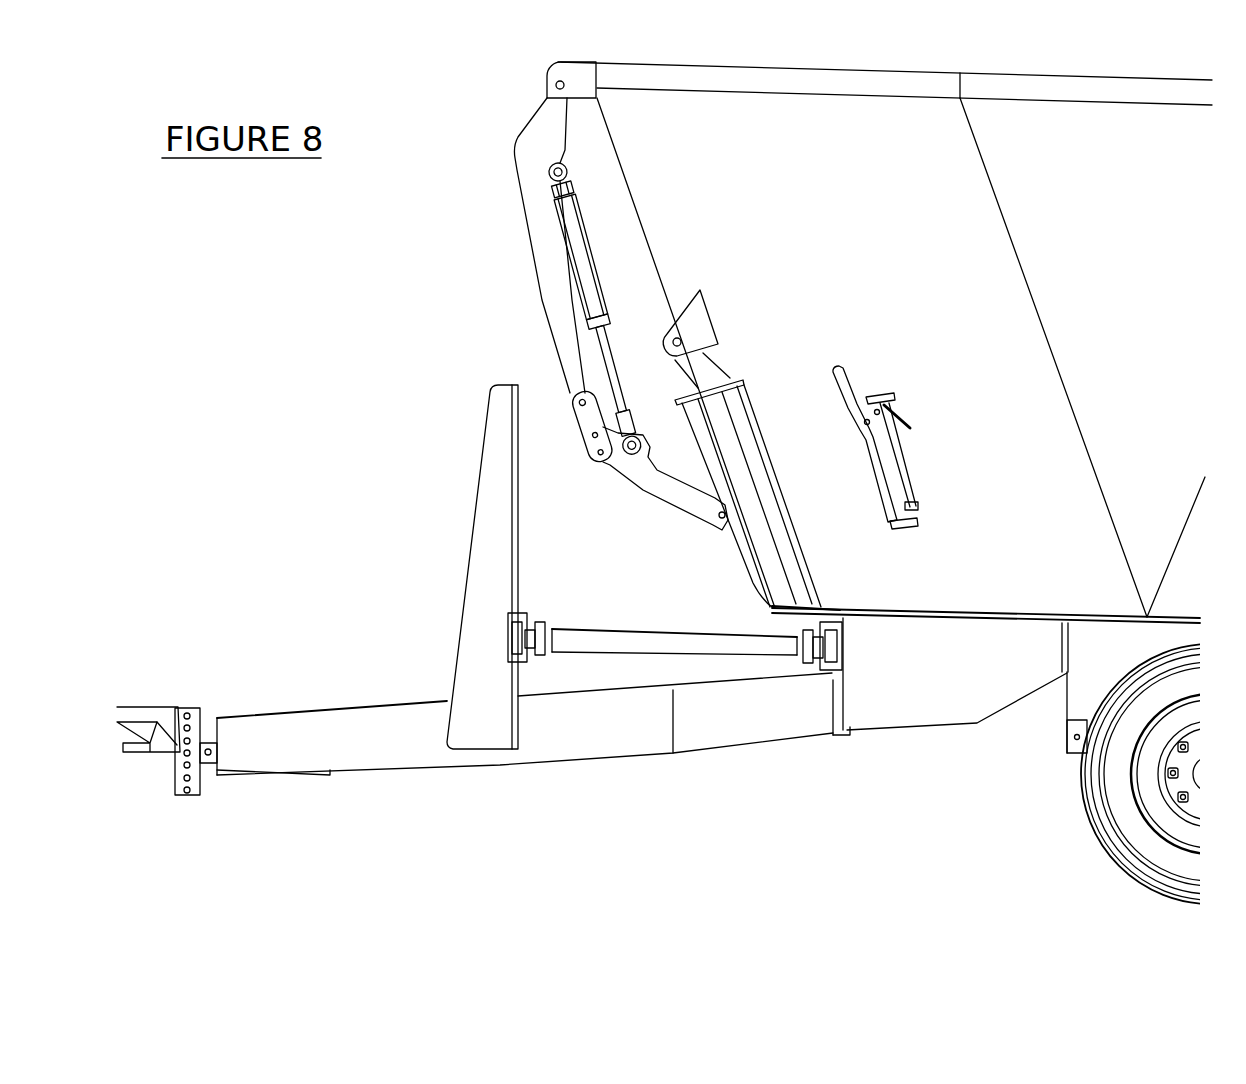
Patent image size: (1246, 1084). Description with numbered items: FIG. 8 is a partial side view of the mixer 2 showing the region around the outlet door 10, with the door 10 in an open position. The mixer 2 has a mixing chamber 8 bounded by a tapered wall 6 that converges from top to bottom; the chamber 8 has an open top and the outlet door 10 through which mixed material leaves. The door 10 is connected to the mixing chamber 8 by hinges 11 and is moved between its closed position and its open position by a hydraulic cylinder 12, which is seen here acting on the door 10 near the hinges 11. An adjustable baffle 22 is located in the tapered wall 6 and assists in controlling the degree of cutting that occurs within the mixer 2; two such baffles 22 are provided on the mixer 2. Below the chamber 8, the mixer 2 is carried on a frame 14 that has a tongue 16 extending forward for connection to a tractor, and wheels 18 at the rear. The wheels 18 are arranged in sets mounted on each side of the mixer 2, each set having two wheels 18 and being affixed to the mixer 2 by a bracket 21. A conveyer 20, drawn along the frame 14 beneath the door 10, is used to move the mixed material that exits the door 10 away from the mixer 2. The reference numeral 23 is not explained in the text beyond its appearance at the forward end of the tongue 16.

The mixer 2 is at (398, 274).
The tapered wall 6 is at (675, 243).
The mixing chamber 8 is at (650, 130).
The outlet door 10 is at (772, 515).
The hinges 11 is at (702, 317).
The hydraulic cylinder 12 is at (580, 228).
The frame 14 is at (933, 658).
The tongue 16 is at (352, 747).
The wheels 18 is at (1130, 795).
The conveyer 20 is at (620, 637).
The bracket 21 is at (1097, 687).
The adjustable baffle 22 is at (888, 455).
The hitch coupler 23 is at (148, 710).